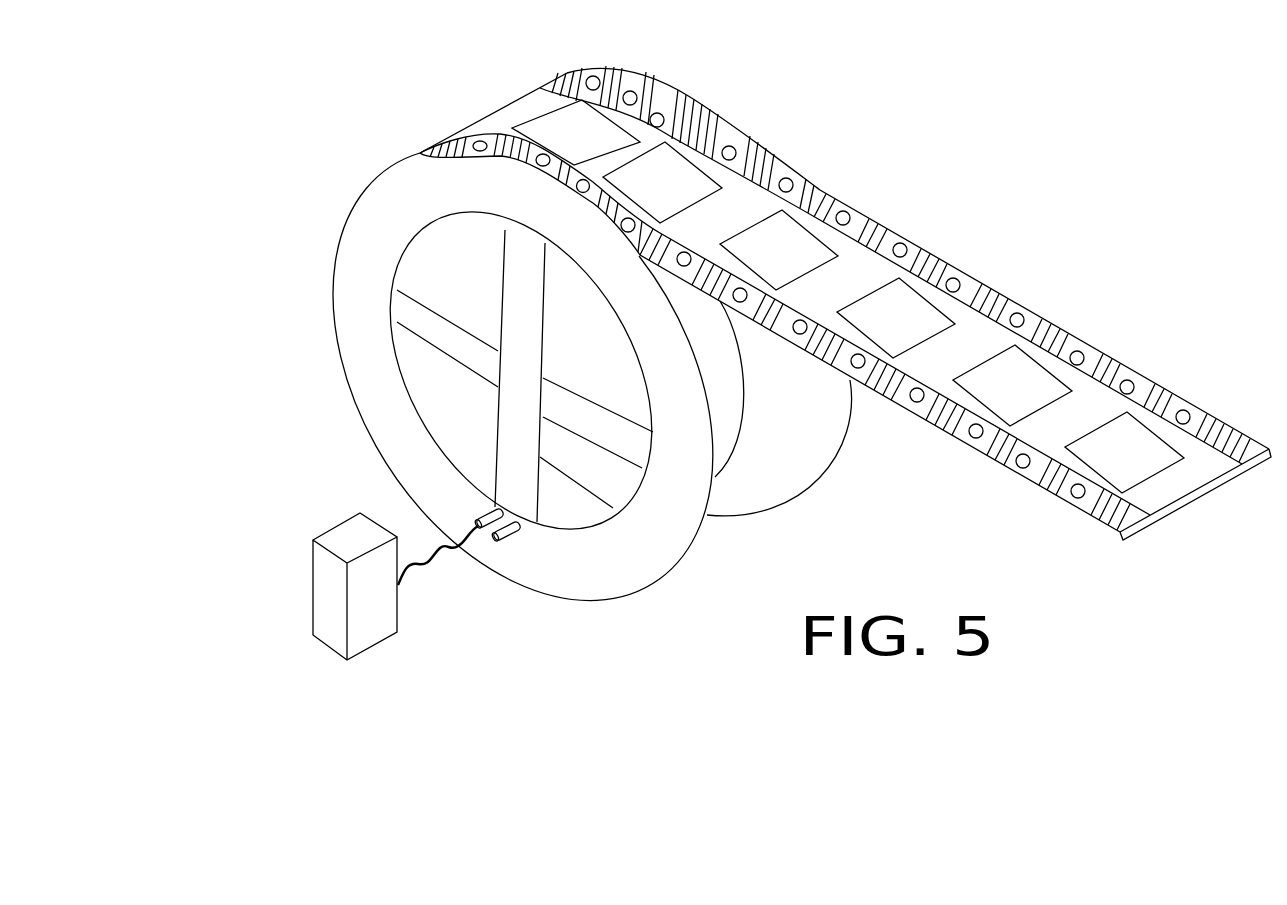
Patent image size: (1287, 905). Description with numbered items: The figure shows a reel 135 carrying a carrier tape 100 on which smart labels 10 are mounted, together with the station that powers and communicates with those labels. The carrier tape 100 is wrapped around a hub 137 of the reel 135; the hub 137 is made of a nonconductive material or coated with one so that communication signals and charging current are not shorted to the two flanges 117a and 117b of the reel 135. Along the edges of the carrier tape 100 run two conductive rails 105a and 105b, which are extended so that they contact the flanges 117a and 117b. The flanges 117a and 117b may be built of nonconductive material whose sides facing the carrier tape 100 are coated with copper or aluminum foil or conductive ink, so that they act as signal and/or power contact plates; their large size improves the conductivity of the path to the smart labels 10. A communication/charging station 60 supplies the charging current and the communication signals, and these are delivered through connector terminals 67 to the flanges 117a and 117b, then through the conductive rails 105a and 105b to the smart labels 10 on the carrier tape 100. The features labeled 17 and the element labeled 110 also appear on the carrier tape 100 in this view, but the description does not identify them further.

The smart labels 10 is at (848, 296).
The hole 17 is at (1108, 496).
The communication/charging station 60 is at (325, 607).
The connector terminals 67 is at (480, 515).
The carrier tape 100 is at (845, 299).
The conductive rail 105a is at (966, 442).
The conductive rail 105b is at (885, 236).
The band surface 110 is at (1076, 350).
The flange 117a is at (375, 278).
The flange 117b is at (810, 455).
The reel 135 is at (569, 377).
The hub 137 is at (420, 355).